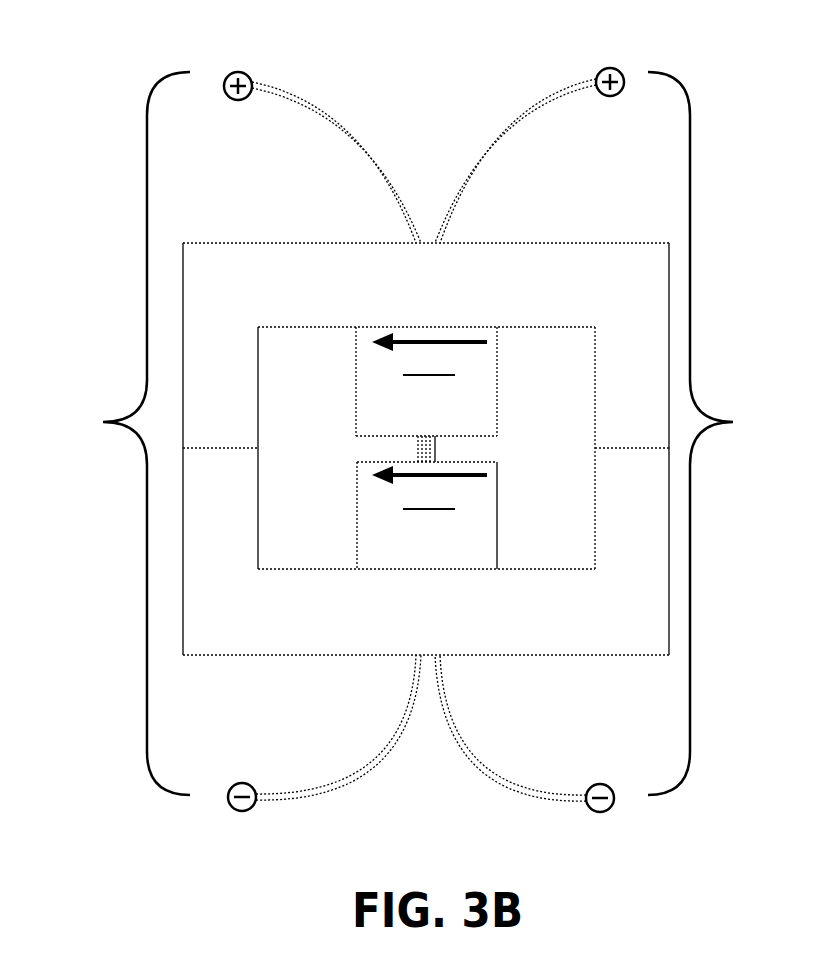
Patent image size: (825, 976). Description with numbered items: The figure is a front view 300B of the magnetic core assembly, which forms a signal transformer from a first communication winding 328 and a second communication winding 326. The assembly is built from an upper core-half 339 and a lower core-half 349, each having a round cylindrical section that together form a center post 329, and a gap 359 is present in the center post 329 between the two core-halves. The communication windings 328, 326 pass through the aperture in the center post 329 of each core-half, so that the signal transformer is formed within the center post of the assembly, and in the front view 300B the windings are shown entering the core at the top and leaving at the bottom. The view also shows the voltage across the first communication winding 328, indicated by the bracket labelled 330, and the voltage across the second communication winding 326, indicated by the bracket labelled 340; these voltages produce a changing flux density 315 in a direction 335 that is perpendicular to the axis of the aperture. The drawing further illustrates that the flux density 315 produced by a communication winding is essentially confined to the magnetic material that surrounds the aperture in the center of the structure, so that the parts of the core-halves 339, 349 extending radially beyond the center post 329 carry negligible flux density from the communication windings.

The front view of the magnetic core assembly 300B is at (457, 54).
The second communication winding 326 is at (533, 117).
The first communication winding 328 is at (310, 118).
The upper core-half 339 is at (260, 306).
The lower core-half 349 is at (255, 626).
The center post 329 is at (352, 387).
The changing flux density 315 is at (417, 378).
The direction of flux density 335 is at (465, 347).
The gap 359 is at (352, 453).
The first capacitor voltage VC1 330 is at (80, 410).
The second capacitor voltage VC2 340 is at (768, 410).